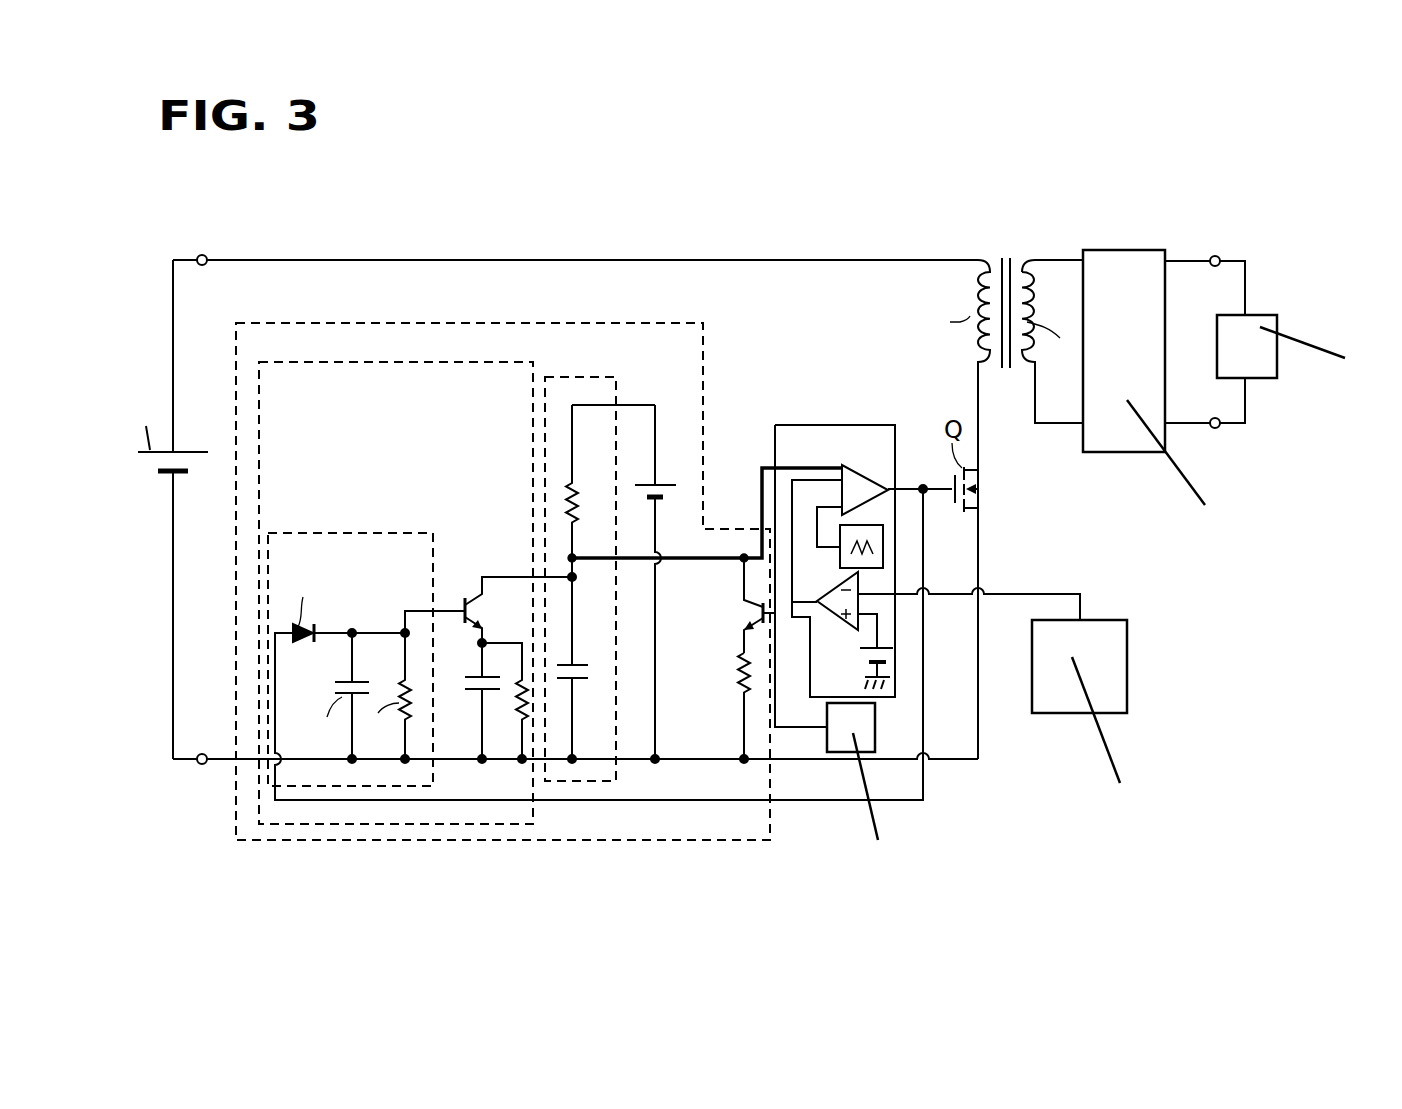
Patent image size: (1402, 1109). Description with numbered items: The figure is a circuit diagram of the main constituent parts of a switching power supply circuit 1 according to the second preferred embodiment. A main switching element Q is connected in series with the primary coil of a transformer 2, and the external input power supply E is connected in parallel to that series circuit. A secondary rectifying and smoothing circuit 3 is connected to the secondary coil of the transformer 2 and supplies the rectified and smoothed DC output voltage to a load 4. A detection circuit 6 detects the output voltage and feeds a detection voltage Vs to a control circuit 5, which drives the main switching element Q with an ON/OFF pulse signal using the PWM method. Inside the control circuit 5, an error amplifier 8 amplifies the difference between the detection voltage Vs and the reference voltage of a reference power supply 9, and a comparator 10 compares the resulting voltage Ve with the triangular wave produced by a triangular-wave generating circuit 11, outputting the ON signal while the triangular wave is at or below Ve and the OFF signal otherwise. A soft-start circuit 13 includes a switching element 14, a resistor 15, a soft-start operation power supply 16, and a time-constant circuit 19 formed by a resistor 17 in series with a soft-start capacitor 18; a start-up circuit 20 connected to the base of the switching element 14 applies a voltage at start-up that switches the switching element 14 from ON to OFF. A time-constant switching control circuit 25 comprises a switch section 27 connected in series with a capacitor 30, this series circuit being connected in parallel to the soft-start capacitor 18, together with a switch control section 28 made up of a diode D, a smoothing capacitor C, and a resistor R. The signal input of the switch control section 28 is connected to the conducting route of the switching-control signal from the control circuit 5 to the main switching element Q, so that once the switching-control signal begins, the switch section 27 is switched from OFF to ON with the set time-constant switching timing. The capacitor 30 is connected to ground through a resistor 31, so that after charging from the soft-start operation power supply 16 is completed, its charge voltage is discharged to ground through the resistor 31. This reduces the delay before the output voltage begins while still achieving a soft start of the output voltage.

The switching power supply circuit 1 is at (668, 180).
The transformer 2 is at (1007, 257).
The secondary rectifying and smoothing circuit 3 is at (1125, 257).
The load 4 is at (1257, 315).
The control circuit 5 is at (828, 423).
The detection circuit 6 is at (1107, 633).
The error amplifier 8 is at (843, 627).
The reference power supply 9 is at (867, 657).
The comparator 10 is at (863, 470).
The triangular-wave generating circuit 11 is at (853, 534).
The soft-start circuit 13 is at (427, 323).
The switching element 14 is at (749, 619).
The resistor 15 is at (743, 677).
The soft-start operation power supply 16 is at (658, 482).
The resistor 17 is at (572, 487).
The soft-start capacitor 18 is at (573, 661).
The time-constant circuit 19 is at (574, 377).
The start-up circuit 20 is at (875, 732).
The time-constant switching control circuit 25 is at (323, 362).
The switch section 27 is at (465, 596).
The switch control section 28 is at (332, 533).
The capacitor 30 is at (473, 697).
The resistor 31 is at (518, 707).